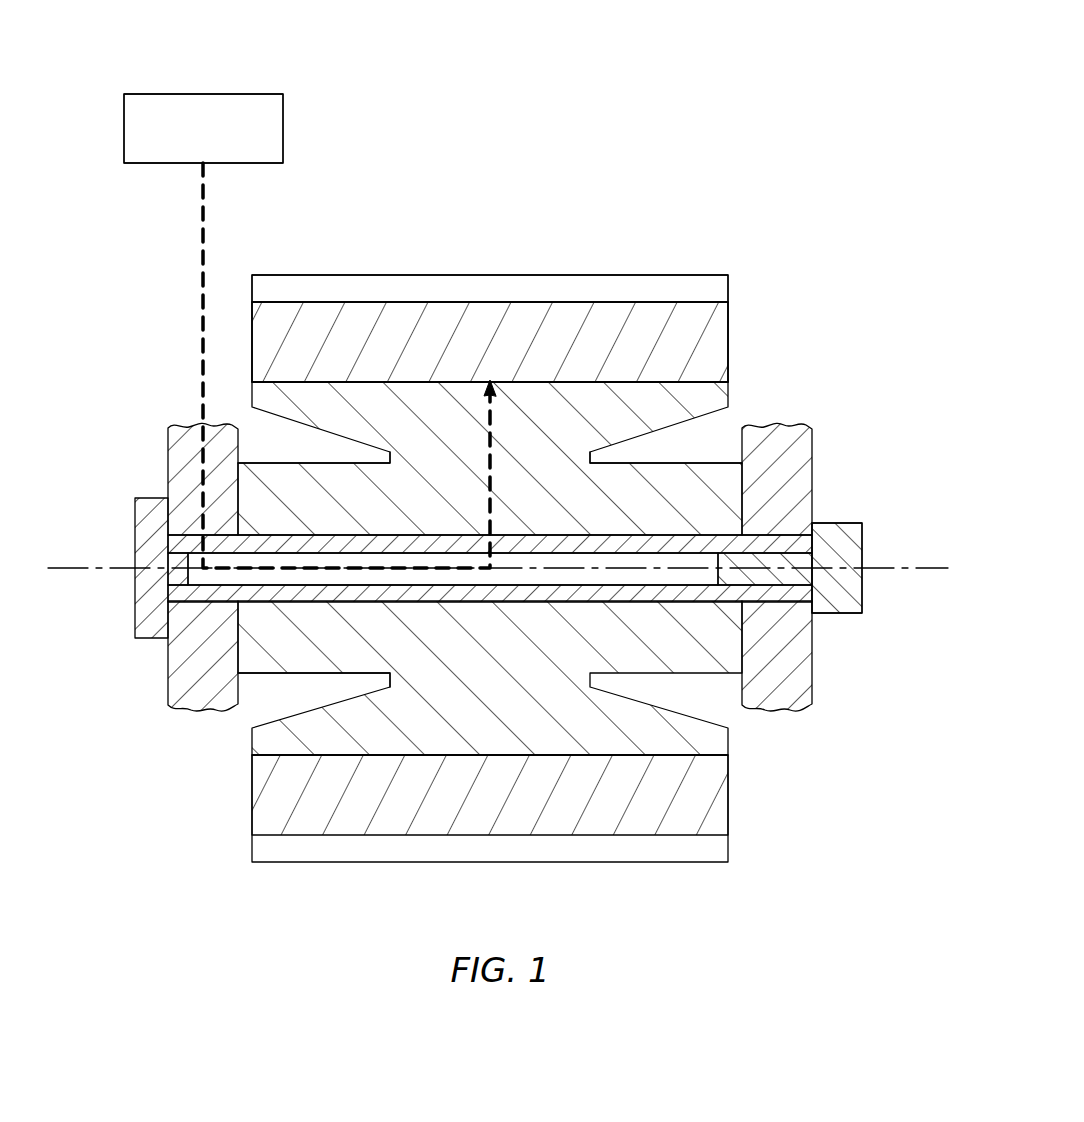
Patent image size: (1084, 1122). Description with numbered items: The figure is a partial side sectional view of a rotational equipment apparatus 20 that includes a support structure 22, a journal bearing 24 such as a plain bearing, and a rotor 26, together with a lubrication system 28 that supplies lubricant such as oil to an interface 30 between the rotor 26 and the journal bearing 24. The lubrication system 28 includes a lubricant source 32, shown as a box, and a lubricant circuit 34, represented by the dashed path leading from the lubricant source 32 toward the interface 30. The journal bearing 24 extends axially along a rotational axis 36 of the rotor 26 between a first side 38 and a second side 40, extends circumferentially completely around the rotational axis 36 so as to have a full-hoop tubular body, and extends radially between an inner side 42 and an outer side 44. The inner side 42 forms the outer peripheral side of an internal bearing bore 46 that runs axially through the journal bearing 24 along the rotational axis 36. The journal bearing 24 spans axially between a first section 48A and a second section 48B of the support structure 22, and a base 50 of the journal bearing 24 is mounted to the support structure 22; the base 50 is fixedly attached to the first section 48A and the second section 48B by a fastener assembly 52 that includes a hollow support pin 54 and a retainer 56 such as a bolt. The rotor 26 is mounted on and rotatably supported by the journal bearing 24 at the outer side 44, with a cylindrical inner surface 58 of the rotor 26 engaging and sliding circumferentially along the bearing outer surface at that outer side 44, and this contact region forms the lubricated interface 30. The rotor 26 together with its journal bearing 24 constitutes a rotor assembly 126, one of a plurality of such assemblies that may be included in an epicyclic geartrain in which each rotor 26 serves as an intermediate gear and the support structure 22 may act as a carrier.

The rotational equipment apparatus 20 is at (753, 94).
The support structure 22 is at (838, 431).
The journal bearing 24 is at (746, 389).
The rotor 26 is at (742, 320).
The lubrication system 28 is at (305, 93).
The interface 30 is at (249, 379).
The lubricant source 32 is at (245, 94).
The lubricant circuit 34 is at (199, 366).
The rotational axis 36 is at (943, 588).
The first side 38 is at (229, 466).
The second side 40 is at (757, 465).
The inner side 42 is at (624, 541).
The outer side 44 is at (716, 372).
The bearing bore 46 is at (614, 605).
The first section 48A is at (163, 700).
The second section 48B is at (827, 710).
The base 50 is at (268, 678).
The fastener assembly 52 is at (870, 529).
The hollow support pin 54 is at (134, 592).
The retainer 56 is at (847, 614).
The cylindrical inner surface 58 is at (595, 387).
The rotor assembly 126 is at (737, 241).